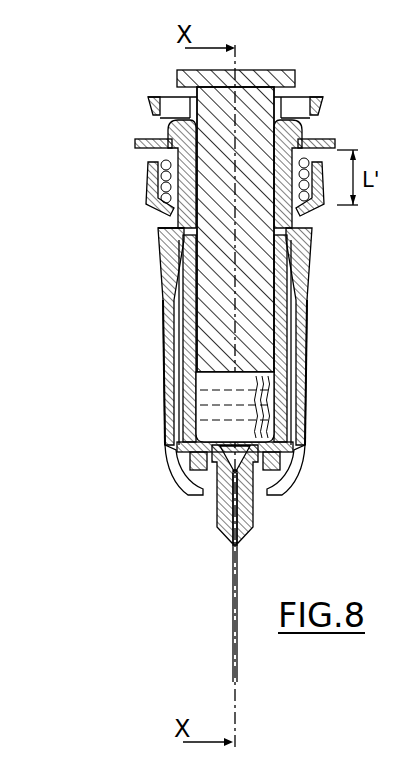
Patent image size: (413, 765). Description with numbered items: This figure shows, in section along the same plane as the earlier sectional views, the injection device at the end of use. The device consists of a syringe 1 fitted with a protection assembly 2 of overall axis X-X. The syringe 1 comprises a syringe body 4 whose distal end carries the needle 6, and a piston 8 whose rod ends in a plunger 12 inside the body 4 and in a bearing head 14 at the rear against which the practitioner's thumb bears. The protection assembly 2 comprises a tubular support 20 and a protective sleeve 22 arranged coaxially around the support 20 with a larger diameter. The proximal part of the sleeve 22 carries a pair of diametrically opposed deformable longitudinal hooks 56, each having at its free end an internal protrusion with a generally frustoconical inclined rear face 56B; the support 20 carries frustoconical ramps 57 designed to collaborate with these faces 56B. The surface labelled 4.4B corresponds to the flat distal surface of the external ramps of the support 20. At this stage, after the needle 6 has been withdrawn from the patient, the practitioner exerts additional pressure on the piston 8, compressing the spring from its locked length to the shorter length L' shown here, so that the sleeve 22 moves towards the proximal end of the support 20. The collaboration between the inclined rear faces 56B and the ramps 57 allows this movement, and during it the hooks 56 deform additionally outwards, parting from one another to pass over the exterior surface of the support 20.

The syringe 1 is at (134, 100).
The protection assembly 2 is at (164, 508).
The syringe body 4 is at (303, 430).
The needle holder wall 4.4B is at (180, 380).
The needle 6 is at (238, 583).
The piston 8 is at (252, 290).
The plunger 12 is at (303, 392).
The bearing head 14 is at (293, 82).
The support 20 is at (128, 213).
The protective sleeve 22 is at (318, 331).
The deformable longitudinal hooks 56 is at (157, 260).
The inclined rear face 56B is at (313, 250).
The frustoconical ramps 57 is at (157, 237).